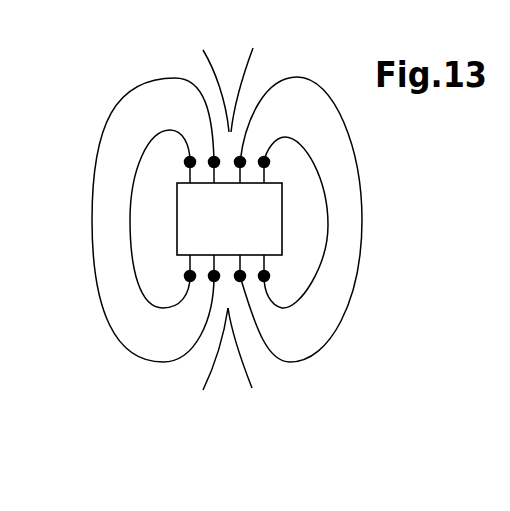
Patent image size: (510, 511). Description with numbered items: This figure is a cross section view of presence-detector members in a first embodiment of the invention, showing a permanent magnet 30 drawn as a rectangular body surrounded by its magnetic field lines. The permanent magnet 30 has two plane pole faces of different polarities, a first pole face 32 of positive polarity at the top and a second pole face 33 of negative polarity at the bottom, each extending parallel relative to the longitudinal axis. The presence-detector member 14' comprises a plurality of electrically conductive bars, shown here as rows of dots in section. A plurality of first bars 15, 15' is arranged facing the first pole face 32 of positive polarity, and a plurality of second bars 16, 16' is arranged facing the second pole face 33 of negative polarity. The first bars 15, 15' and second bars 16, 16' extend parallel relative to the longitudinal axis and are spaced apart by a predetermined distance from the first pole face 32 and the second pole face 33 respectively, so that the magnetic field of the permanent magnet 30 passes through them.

The presence-detector member 14' is at (296, 158).
The first bar 15 is at (144, 147).
The first bar 15' is at (195, 96).
The second bar 16 is at (278, 337).
The second bar 16' is at (321, 323).
The permanent magnet 30 is at (270, 223).
The first pole face 32 is at (279, 176).
The second pole face 33 is at (285, 269).